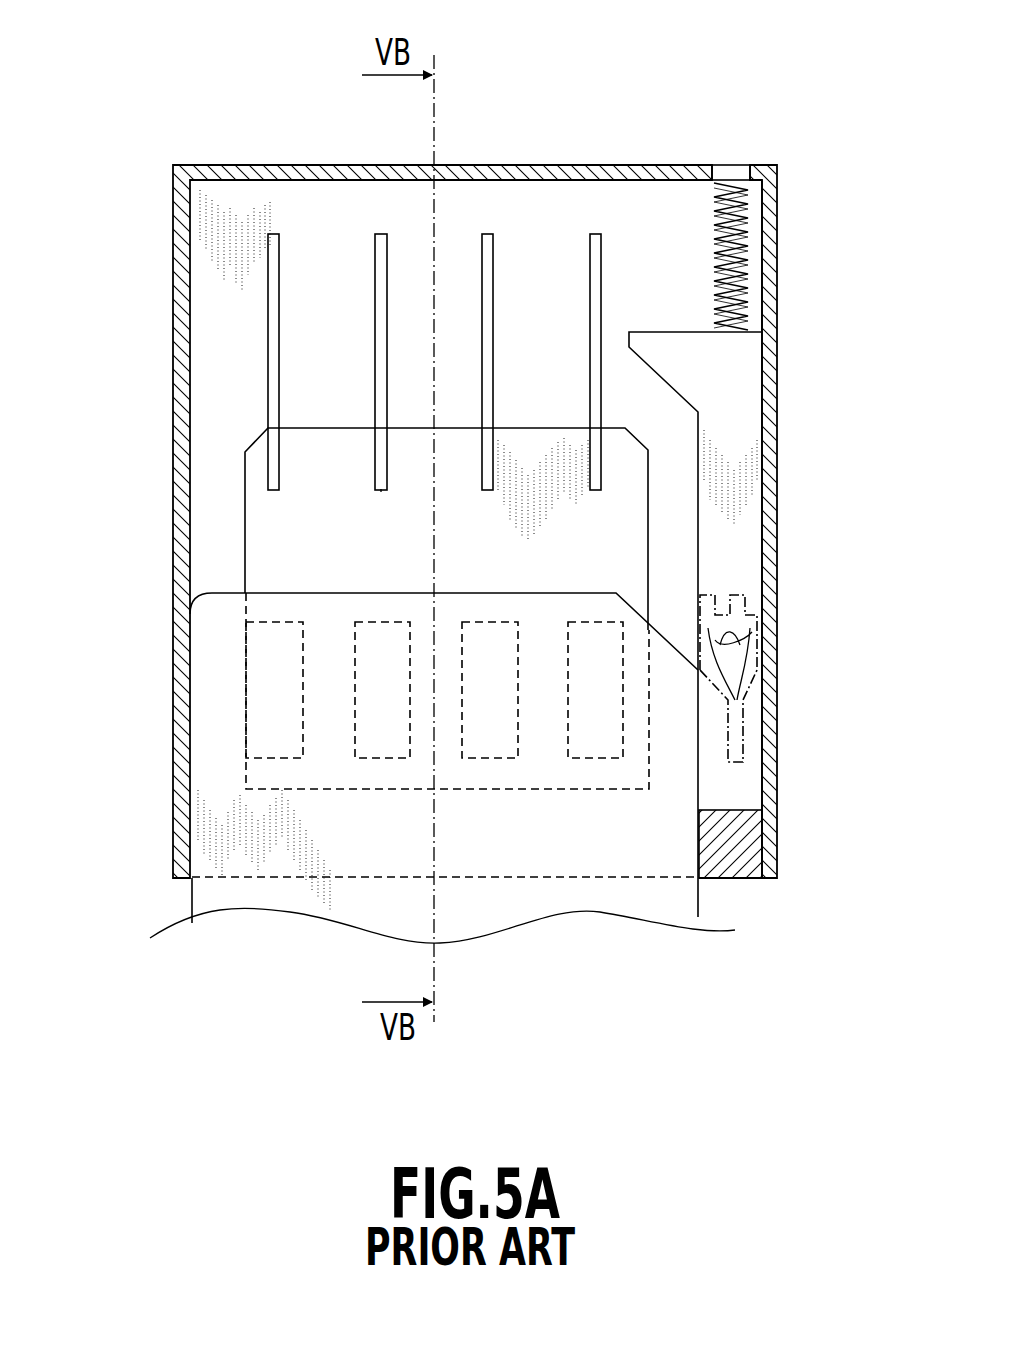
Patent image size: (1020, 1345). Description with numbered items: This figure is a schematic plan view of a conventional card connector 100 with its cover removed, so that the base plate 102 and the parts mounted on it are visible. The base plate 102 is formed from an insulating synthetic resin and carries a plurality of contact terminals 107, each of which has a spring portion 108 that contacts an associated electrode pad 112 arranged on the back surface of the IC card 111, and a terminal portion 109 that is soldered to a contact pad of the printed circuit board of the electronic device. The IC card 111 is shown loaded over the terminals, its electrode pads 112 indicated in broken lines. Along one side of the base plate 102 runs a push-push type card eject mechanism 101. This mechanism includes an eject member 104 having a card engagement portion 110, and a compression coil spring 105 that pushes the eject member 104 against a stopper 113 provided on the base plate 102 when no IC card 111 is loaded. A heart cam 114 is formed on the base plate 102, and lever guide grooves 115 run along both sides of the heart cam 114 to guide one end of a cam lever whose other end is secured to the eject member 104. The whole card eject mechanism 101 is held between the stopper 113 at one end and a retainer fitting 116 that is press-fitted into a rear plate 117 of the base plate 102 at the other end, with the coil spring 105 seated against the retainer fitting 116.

The card connector 100 is at (303, 140).
The card eject mechanism 101 is at (737, 780).
The base plate 102 is at (232, 200).
The eject member 104 is at (735, 437).
The compression coil spring 105 is at (745, 190).
The contact terminals 107 is at (383, 398).
The spring portion 108 is at (272, 262).
The terminal portion 109 is at (381, 492).
The card engagement portion 110 is at (655, 345).
The IC card 111 is at (212, 905).
The electrode pads 112 is at (275, 695).
The stopper 113 is at (728, 855).
The heart cam 114 is at (745, 640).
The lever guide grooves 115 is at (750, 690).
The retainer fitting 116 is at (740, 180).
The rear plate 117 is at (682, 170).